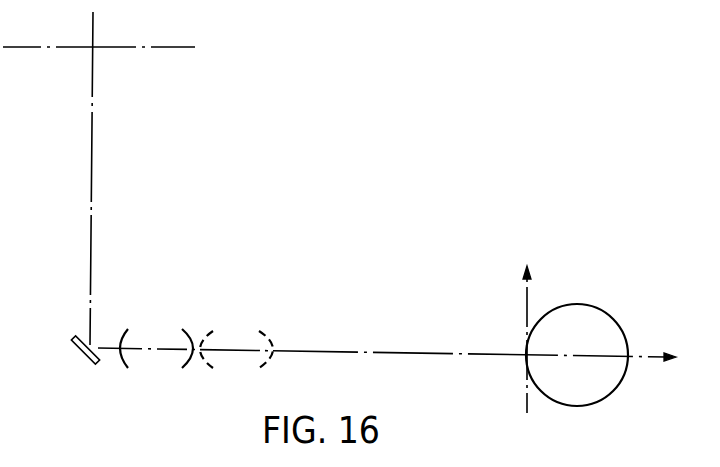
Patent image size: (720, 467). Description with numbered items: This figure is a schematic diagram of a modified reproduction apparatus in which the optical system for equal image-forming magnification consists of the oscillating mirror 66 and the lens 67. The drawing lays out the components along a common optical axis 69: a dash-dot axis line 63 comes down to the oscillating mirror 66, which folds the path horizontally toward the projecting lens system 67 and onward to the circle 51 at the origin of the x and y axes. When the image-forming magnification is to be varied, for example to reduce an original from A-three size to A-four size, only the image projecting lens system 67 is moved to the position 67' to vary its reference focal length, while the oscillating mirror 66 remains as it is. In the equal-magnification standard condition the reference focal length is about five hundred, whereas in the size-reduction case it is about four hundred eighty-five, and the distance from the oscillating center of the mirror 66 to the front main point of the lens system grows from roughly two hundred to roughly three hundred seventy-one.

The aperture / spot circle 51 is at (576, 407).
The optical axis line 63 is at (163, 47).
The oscillating mirror 66 is at (90, 354).
The lens 67 is at (166, 330).
The position of the projecting lens system 67' is at (252, 330).
The optical axis 69 is at (423, 352).